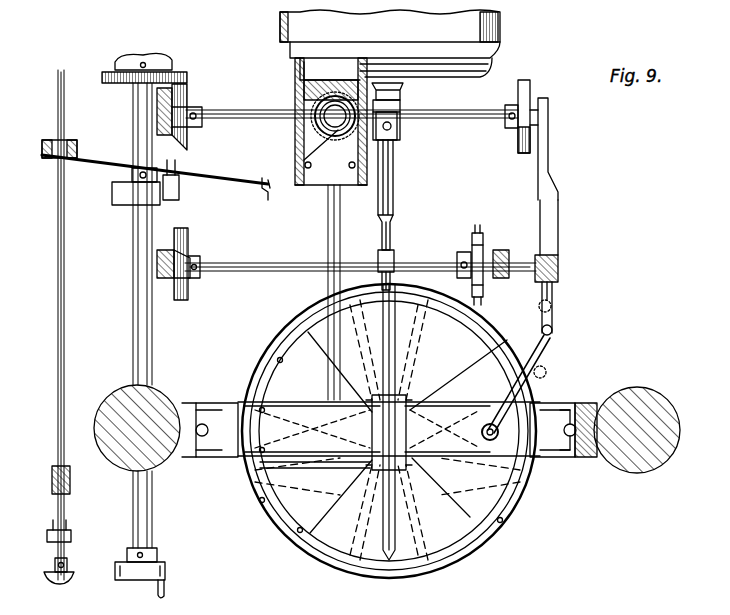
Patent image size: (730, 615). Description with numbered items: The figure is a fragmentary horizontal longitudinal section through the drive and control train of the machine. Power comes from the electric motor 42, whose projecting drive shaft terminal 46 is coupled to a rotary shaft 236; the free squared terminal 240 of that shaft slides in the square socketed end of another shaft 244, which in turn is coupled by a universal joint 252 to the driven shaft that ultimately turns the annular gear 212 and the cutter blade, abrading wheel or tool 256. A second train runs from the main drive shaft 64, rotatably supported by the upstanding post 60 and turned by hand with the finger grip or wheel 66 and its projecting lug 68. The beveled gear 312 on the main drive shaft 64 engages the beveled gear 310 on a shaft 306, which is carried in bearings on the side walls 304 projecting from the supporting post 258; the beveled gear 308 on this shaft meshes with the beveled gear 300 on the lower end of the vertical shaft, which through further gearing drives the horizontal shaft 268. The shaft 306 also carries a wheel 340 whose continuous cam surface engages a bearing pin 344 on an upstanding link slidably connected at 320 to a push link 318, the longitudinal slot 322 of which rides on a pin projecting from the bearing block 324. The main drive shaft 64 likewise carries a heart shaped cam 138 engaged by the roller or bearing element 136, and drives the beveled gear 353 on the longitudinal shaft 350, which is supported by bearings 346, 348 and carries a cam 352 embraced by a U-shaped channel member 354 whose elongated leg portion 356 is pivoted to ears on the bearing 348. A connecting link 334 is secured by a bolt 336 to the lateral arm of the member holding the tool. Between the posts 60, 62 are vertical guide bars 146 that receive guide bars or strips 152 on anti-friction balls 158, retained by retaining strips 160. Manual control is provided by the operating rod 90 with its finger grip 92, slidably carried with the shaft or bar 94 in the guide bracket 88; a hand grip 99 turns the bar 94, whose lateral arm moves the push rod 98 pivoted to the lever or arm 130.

The electric motor 42 is at (497, 42).
The drive shaft terminal 46 is at (392, 80).
The universal joint 252 is at (398, 112).
The shaft 306 is at (420, 126).
The shaft 244 is at (393, 166).
The squared terminal 240 is at (382, 226).
The rotary shaft 236 is at (392, 252).
The longitudinal shaft 350 is at (246, 262).
The horizontal shaft 268 is at (328, 280).
The beveled gear 300 is at (304, 135).
The supporting post 258 is at (304, 90).
The side walls 304 is at (305, 118).
The beveled gear 308 is at (303, 165).
The finger grip 92 is at (200, 180).
The lever or arm 130 is at (270, 200).
The beveled gear 312 is at (108, 78).
The beveled gear 310 is at (190, 142).
The main drive shaft 64 is at (152, 512).
The finger grip or wheel 66 is at (157, 562).
The projecting lug 68 is at (165, 594).
The heart shaped cam 138 is at (122, 205).
The roller or bearing element 136 is at (180, 200).
The bearing 346 is at (158, 270).
The beveled gear 353 is at (190, 232).
The cam 352 is at (458, 256).
The U-shaped channel member 354 is at (474, 232).
The bearing 348 is at (501, 250).
The elongated leg portion 356 is at (492, 304).
The wheel 340 is at (532, 86).
The bearing pin 344 is at (520, 140).
The slidable connection 320 is at (550, 104).
The push link 318 is at (558, 220).
The bearing block 324 is at (560, 268).
The longitudinal slot 322 is at (554, 296).
The connecting link 334 is at (548, 380).
The bolt 336 is at (500, 440).
The upstanding post 60 is at (158, 402).
The upstanding post 62 is at (668, 414).
The guide bars 146 is at (593, 457).
The anti-friction balls 158 is at (572, 460).
The guide bars or strips 152 is at (542, 460).
The retaining strips 160 is at (556, 410).
The annular gear 212 is at (408, 380).
The cutter blade, abrading wheel or tool 256 is at (395, 560).
The operating rod 90 is at (57, 352).
The shaft or bar 94 is at (57, 196).
The push rod 98 is at (70, 144).
The guide bracket 88 is at (52, 480).
The hand grip 99 is at (47, 536).